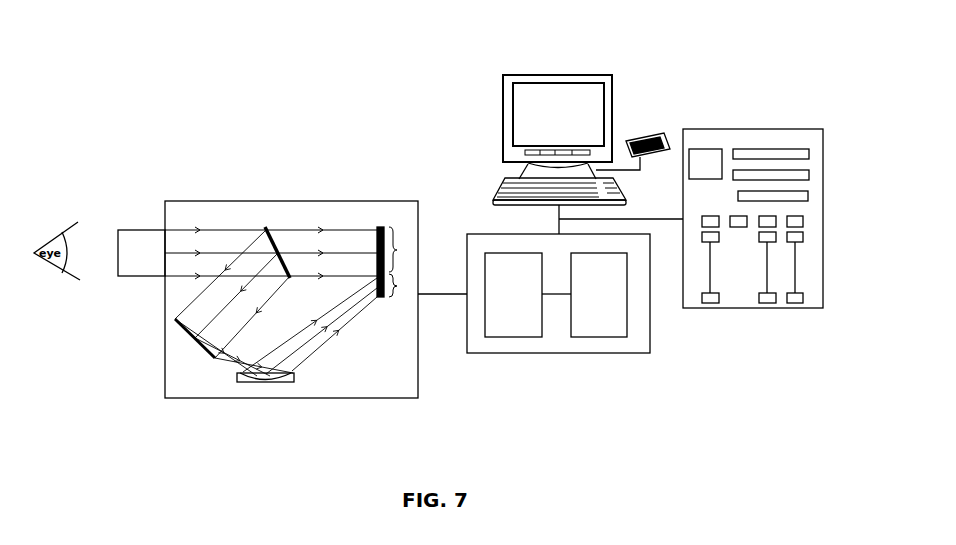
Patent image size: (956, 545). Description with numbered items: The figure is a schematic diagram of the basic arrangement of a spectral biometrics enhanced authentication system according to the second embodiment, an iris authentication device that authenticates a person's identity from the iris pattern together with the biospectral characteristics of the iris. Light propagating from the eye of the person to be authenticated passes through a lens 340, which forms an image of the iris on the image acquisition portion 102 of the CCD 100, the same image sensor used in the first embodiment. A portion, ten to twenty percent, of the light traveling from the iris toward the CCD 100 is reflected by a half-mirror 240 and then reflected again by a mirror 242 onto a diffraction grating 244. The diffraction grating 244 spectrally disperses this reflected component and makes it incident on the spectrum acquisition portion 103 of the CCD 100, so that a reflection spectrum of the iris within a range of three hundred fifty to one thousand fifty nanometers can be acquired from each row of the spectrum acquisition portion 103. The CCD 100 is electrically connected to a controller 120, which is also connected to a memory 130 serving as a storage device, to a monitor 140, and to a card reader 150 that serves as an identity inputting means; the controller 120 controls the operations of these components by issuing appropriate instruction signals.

The lens 340 is at (141, 253).
The half-mirror 240 is at (269, 244).
The mirror 242 is at (190, 338).
The diffraction grating 244 is at (265, 386).
The CCD 100 is at (379, 273).
The image acquisition portion 102 is at (405, 249).
The spectrum acquisition portion 103 is at (405, 285).
The controller 120 is at (558, 312).
The memory 130 is at (753, 202).
The monitor 140 is at (559, 126).
The card reader 150 is at (633, 135).